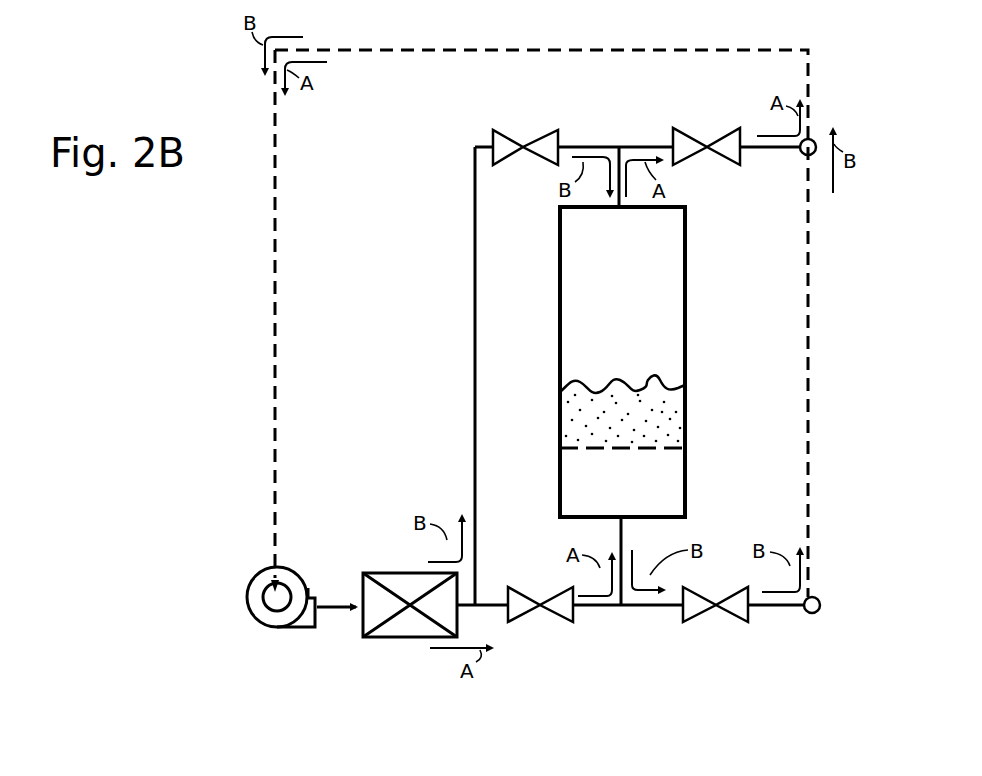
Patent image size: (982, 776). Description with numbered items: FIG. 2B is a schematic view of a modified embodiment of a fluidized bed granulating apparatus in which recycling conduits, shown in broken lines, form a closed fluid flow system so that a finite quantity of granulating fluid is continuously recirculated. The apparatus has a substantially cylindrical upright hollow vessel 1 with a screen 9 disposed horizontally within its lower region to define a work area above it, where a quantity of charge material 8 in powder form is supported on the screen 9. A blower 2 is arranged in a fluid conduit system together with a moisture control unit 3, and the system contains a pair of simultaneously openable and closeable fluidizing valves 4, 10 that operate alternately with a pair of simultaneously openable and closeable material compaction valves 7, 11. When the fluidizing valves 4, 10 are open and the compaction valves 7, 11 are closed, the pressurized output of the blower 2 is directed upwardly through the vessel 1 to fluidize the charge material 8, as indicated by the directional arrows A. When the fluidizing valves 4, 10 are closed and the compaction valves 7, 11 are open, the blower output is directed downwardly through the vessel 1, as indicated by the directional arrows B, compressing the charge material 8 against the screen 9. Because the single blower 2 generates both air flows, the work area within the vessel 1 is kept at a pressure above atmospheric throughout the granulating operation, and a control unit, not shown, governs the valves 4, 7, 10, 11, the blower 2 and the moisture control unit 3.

The vessel 1 is at (685, 278).
The blower 2 is at (262, 571).
The moisture control unit 3 is at (405, 573).
The fluidizing valve 4 is at (548, 612).
The material compaction valve 7 is at (700, 612).
The charge material 8 is at (670, 417).
The screen 9 is at (648, 450).
The fluidizing valve 10 is at (712, 137).
The material compaction valve 11 is at (537, 138).